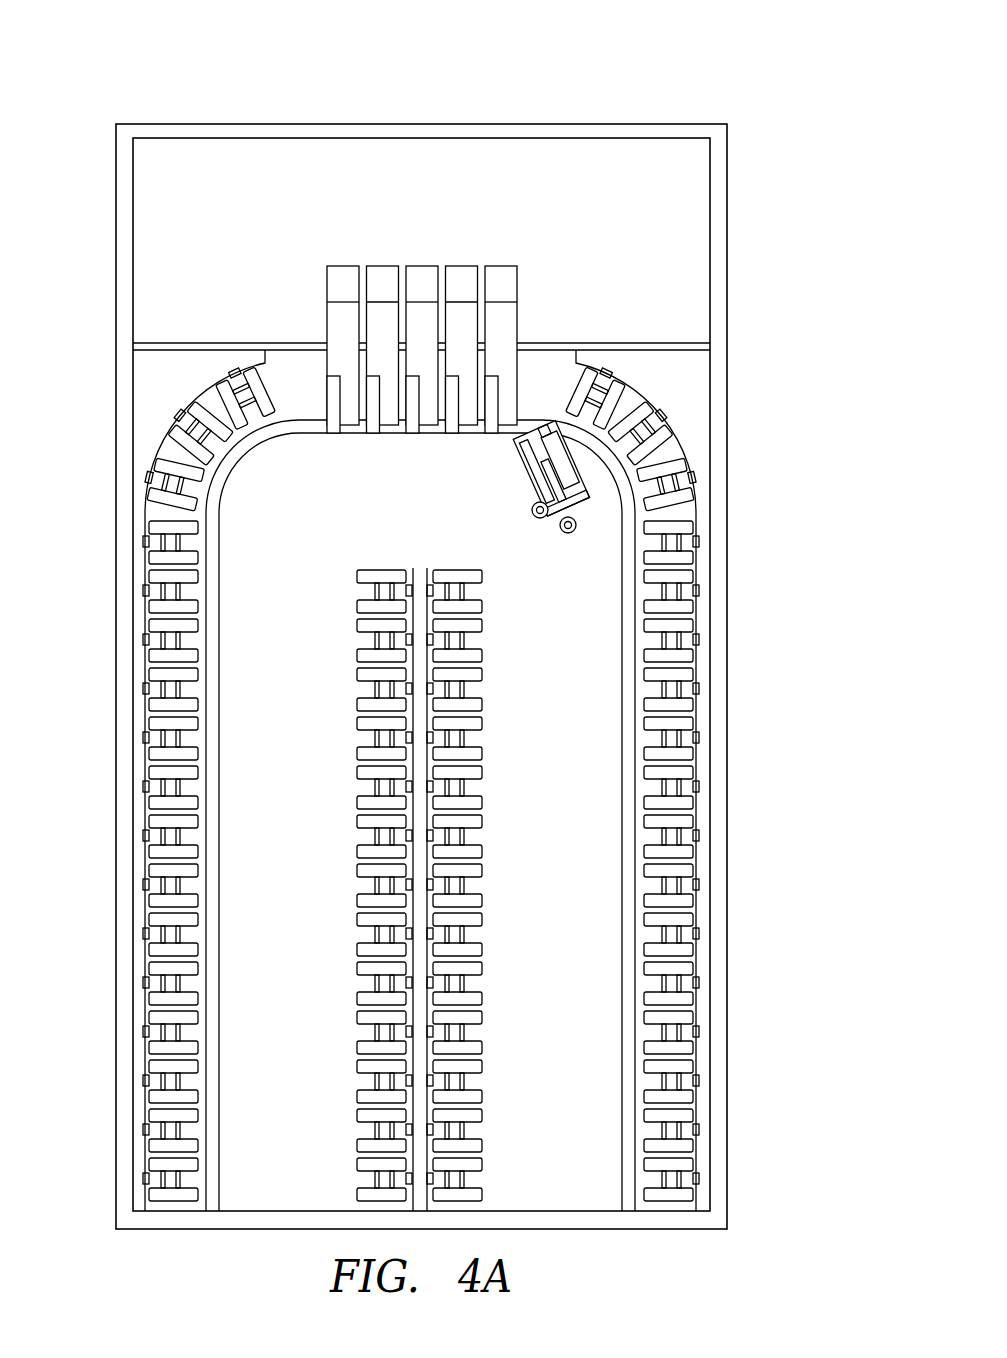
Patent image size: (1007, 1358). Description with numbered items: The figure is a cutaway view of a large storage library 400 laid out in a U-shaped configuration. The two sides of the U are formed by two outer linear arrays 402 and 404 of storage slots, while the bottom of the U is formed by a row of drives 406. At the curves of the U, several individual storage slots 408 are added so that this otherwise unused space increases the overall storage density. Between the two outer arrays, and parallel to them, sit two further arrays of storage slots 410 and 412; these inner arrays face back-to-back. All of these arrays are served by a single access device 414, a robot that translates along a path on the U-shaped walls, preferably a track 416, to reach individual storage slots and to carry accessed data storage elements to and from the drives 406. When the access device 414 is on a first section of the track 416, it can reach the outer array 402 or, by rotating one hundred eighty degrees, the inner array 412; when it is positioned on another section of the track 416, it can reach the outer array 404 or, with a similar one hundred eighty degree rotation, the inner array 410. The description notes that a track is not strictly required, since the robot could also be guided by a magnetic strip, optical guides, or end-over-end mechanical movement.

The library 400 is at (668, 50).
The linear array 402 is at (704, 853).
The linear array 404 is at (126, 737).
The drives 406 is at (530, 278).
The individual storage slots 408 is at (240, 433).
The inner array of storage slots 410 is at (384, 568).
The inner array of storage slots 412 is at (459, 568).
The access device 414 is at (527, 523).
The track 416 is at (221, 1032).